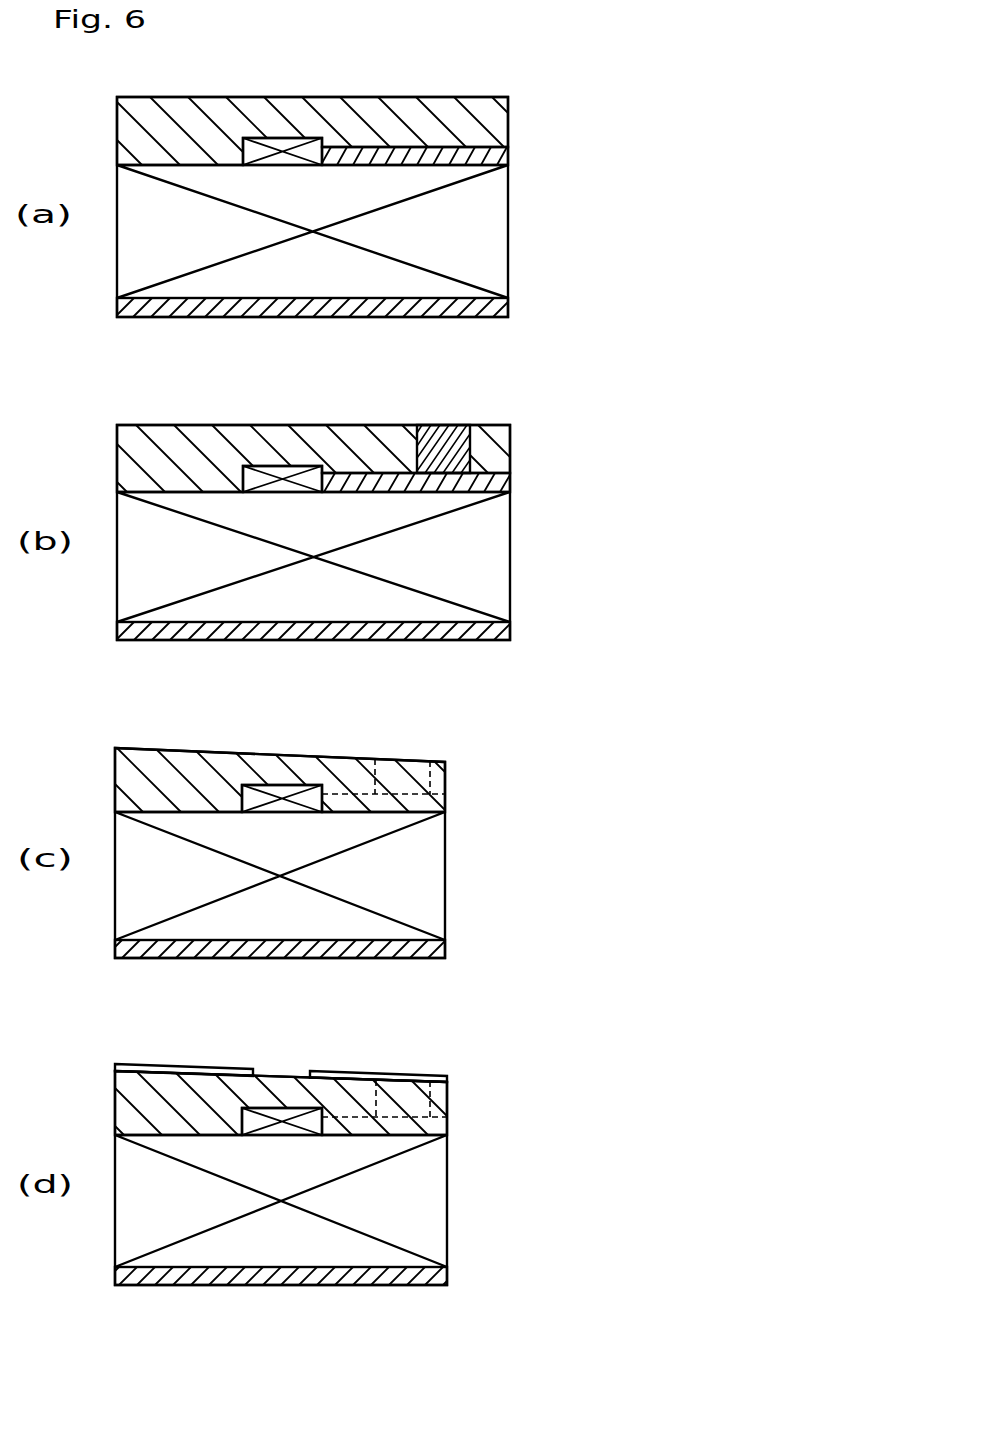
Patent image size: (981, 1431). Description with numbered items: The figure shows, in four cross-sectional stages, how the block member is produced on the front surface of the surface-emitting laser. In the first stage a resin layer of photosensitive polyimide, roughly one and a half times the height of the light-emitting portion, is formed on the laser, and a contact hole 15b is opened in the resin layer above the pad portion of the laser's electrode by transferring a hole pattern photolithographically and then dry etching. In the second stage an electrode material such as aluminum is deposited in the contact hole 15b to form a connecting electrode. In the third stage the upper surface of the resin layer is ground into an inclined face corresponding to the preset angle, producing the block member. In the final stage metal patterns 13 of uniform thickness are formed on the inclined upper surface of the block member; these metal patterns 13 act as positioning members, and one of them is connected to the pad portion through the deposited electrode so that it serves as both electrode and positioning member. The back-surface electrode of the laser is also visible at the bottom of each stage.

The metal patterns 13 is at (180, 1063).
The contact hole 15b is at (467, 440).